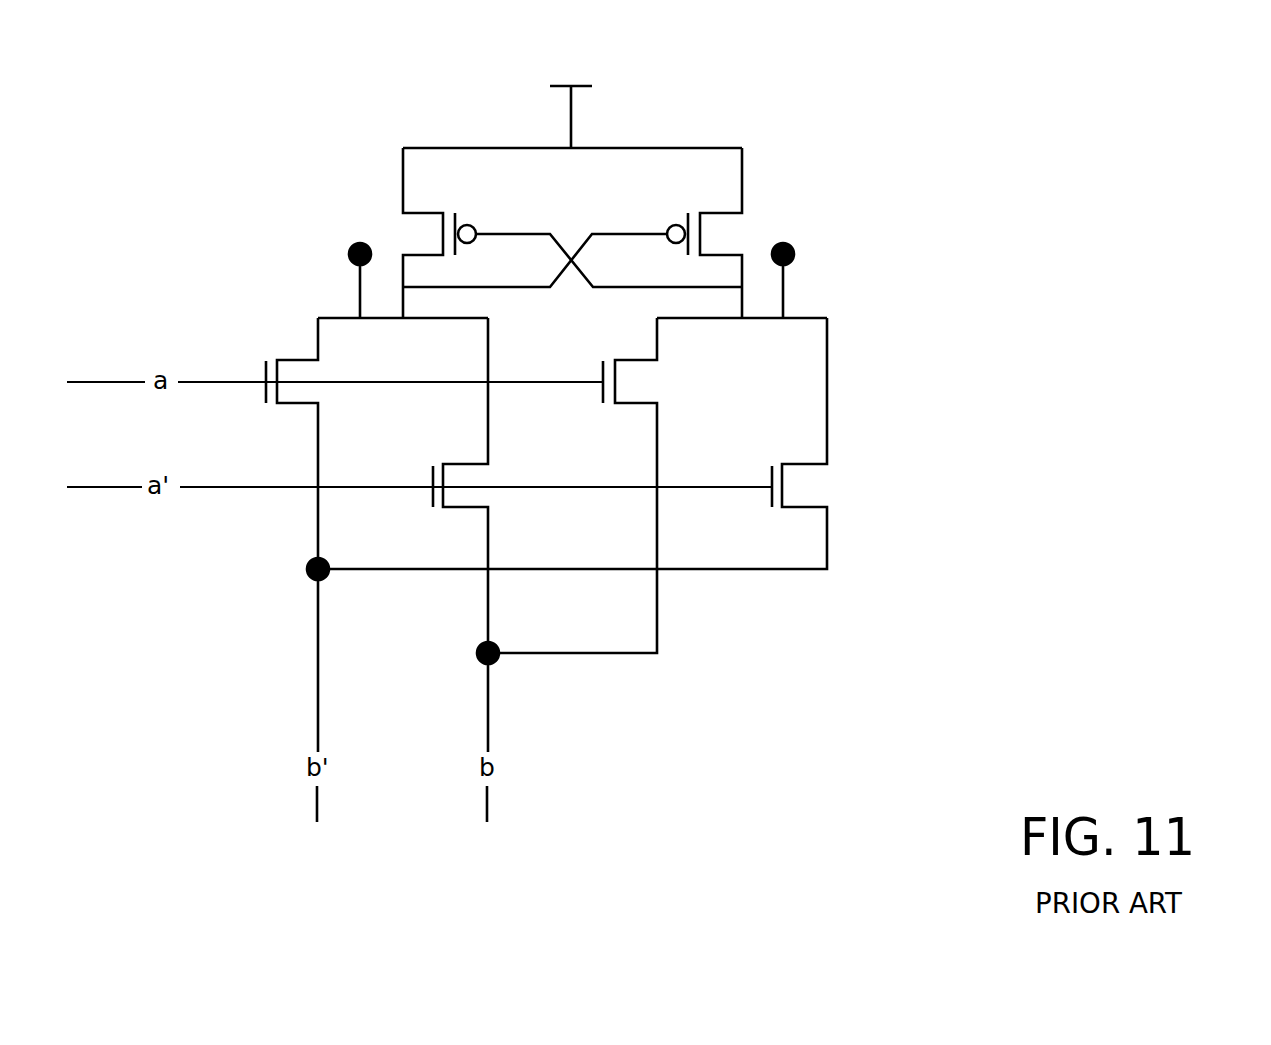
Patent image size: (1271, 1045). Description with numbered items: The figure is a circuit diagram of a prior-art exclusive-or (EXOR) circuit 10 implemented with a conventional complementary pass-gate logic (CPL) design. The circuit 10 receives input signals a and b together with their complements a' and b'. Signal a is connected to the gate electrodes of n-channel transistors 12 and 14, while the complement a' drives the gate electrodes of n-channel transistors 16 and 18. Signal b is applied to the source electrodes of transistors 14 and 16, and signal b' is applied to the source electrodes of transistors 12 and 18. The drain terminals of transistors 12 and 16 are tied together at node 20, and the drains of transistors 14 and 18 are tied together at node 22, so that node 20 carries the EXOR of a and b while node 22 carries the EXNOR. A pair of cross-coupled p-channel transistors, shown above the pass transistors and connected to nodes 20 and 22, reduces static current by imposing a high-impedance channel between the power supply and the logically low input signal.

The exclusive-or (EXOR) circuit 10 is at (908, 190).
The n-channel transistor 12 is at (292, 379).
The n-channel transistor 14 is at (630, 379).
The n-channel transistor 16 is at (460, 430).
The n-channel transistor 18 is at (799, 430).
The node 20 is at (382, 320).
The node 22 is at (748, 318).